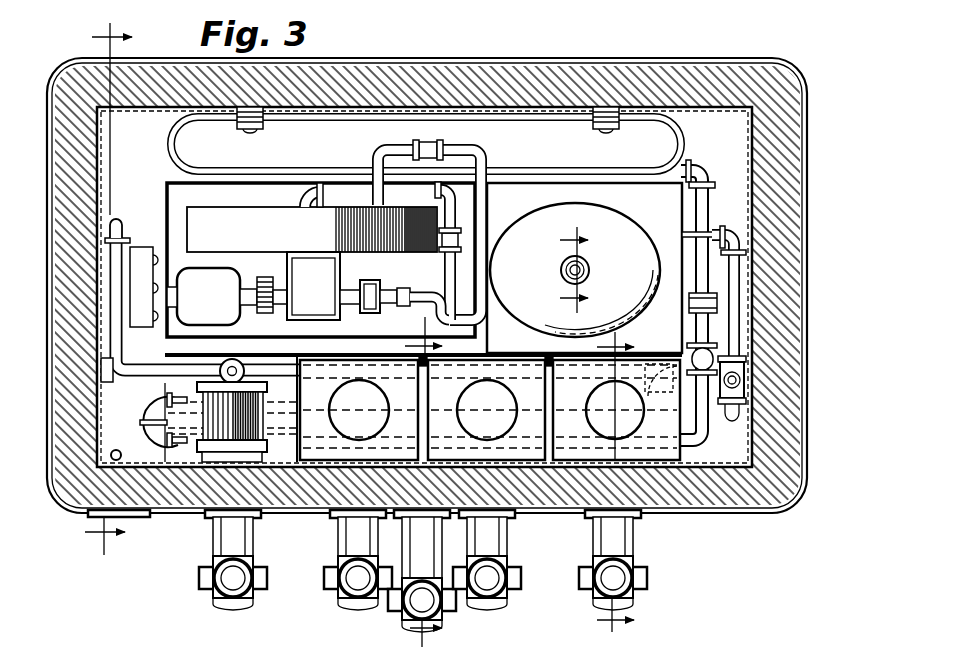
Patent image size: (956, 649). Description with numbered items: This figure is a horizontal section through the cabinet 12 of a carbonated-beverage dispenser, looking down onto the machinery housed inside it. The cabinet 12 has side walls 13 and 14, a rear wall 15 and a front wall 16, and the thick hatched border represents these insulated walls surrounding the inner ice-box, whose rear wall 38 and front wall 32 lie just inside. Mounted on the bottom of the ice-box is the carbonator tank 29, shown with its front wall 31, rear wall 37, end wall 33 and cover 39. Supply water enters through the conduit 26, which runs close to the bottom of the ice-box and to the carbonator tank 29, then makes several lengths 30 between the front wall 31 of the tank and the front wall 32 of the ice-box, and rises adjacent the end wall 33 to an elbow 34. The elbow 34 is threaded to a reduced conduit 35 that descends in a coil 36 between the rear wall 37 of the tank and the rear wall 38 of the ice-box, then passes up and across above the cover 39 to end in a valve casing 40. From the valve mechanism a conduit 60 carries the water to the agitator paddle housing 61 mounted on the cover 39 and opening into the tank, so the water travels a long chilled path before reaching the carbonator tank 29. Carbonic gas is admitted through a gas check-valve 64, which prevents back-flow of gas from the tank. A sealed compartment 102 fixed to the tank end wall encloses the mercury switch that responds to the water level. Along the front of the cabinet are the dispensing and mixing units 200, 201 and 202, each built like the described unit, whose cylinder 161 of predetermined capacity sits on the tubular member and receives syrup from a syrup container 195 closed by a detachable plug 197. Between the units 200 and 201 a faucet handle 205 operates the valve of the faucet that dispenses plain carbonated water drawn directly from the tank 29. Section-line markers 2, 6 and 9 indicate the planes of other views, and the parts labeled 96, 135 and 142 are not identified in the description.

The section line 2- 2 is at (97, 289).
The section line 6- 6 is at (564, 270).
The section line 9- 9 is at (614, 482).
The cabinet 12 is at (178, 485).
The side wall 13 is at (407, 482).
The side wall 14 is at (800, 455).
The rear wall 15 is at (400, 66).
The front wall 16 is at (310, 516).
The conduit 26 is at (128, 349).
The carbonator tank 29 is at (168, 176).
The conduit lengths 30 is at (160, 407).
The front wall 31 is at (300, 345).
The front wall 32 is at (148, 462).
The end wall 33 is at (673, 215).
The elbow 34 is at (710, 172).
The reduced conduit 35 is at (626, 160).
The coil 36 is at (548, 174).
The rear wall 37 is at (285, 173).
The rear wall 38 is at (157, 113).
The cover 39 is at (180, 202).
The valve casing 40 is at (433, 290).
The conduit 60 is at (347, 202).
The agitator paddle housing 61 is at (222, 214).
The gas check-valve 64 is at (733, 420).
The motor 96 is at (207, 283).
The sealed compartment 102 is at (143, 246).
The valve cap 135 is at (627, 598).
The valve 142 is at (623, 572).
The cylinder 161 is at (225, 436).
The syrup container 195 is at (583, 453).
The detachable plug 197 is at (485, 395).
The dispensing and mixing unit 200 is at (548, 560).
The dispensing and mixing unit 201 is at (332, 578).
The dispensing and mixing unit 202 is at (206, 577).
The faucet handle 205 is at (456, 610).